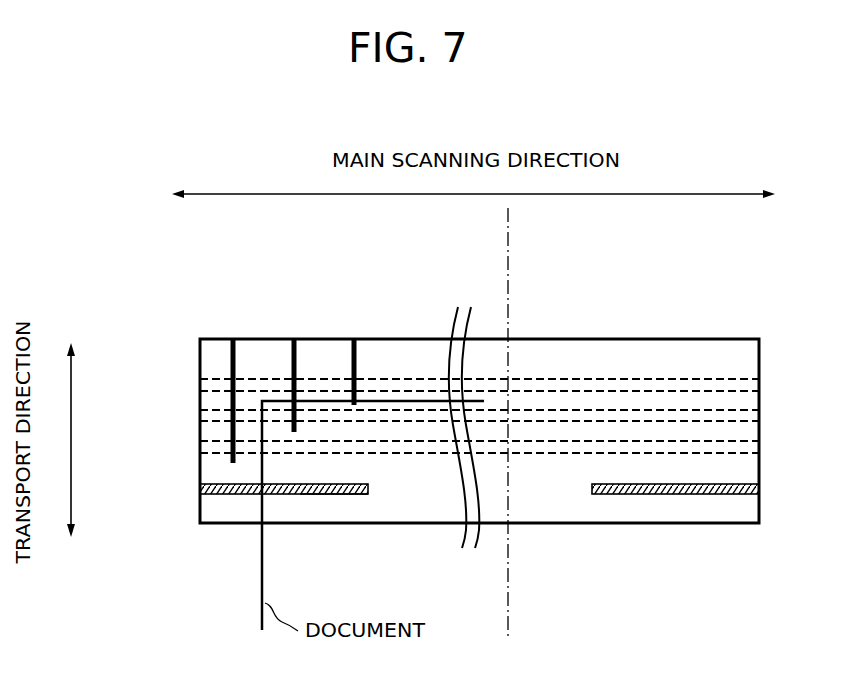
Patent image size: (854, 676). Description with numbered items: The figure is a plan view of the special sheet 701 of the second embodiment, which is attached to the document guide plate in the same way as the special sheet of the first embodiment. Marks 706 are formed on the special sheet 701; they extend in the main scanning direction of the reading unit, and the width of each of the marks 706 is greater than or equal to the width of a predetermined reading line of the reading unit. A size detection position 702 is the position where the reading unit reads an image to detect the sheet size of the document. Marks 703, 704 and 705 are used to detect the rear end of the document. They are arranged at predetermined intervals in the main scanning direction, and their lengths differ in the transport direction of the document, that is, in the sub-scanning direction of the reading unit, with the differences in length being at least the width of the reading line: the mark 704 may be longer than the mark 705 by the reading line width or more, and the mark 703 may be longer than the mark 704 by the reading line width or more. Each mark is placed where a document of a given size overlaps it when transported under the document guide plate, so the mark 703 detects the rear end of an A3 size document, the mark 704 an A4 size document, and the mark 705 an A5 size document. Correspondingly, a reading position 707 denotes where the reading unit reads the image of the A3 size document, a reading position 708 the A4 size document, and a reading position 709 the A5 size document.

The special sheet 701 is at (222, 525).
The size detection position 702 is at (190, 492).
The mark 703 is at (230, 364).
The mark 704 is at (291, 364).
The mark 705 is at (352, 364).
The marks 706 is at (351, 497).
The reading position 707 is at (190, 449).
The reading position 708 is at (190, 418).
The reading position 709 is at (190, 388).